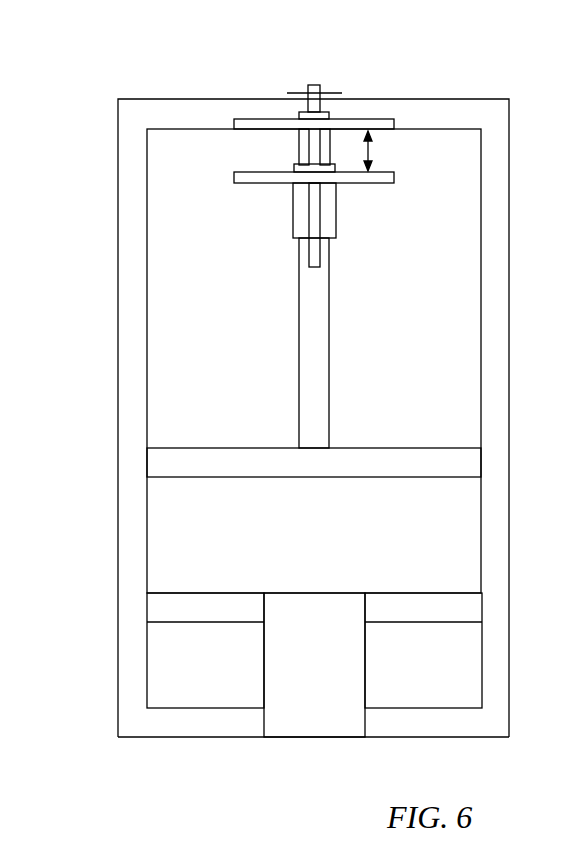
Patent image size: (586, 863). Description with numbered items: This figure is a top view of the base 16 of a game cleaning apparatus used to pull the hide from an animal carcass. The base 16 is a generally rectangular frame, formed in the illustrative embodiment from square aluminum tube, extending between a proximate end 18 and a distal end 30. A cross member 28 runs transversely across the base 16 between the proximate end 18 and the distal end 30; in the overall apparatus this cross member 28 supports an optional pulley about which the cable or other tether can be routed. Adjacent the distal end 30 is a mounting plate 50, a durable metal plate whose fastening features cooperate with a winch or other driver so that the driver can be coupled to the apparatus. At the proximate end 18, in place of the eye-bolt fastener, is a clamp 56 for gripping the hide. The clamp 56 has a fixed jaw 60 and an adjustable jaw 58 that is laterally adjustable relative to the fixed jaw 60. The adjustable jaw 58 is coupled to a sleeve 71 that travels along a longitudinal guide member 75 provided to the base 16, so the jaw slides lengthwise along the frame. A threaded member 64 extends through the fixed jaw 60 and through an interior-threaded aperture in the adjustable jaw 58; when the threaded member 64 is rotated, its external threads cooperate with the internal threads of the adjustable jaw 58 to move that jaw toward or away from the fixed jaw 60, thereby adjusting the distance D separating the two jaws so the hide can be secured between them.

The base 16 is at (82, 437).
The proximate end 18 is at (175, 99).
The cross member 28 is at (430, 463).
The distal end 30 is at (176, 737).
The mounting plate 50 is at (327, 676).
The clamp 56 is at (256, 235).
The adjustable jaw 58 is at (392, 178).
The fixed jaw 60 is at (382, 118).
The threaded member 64 is at (315, 147).
The sleeve 71 is at (323, 222).
The longitudinal guide member 75 is at (313, 355).